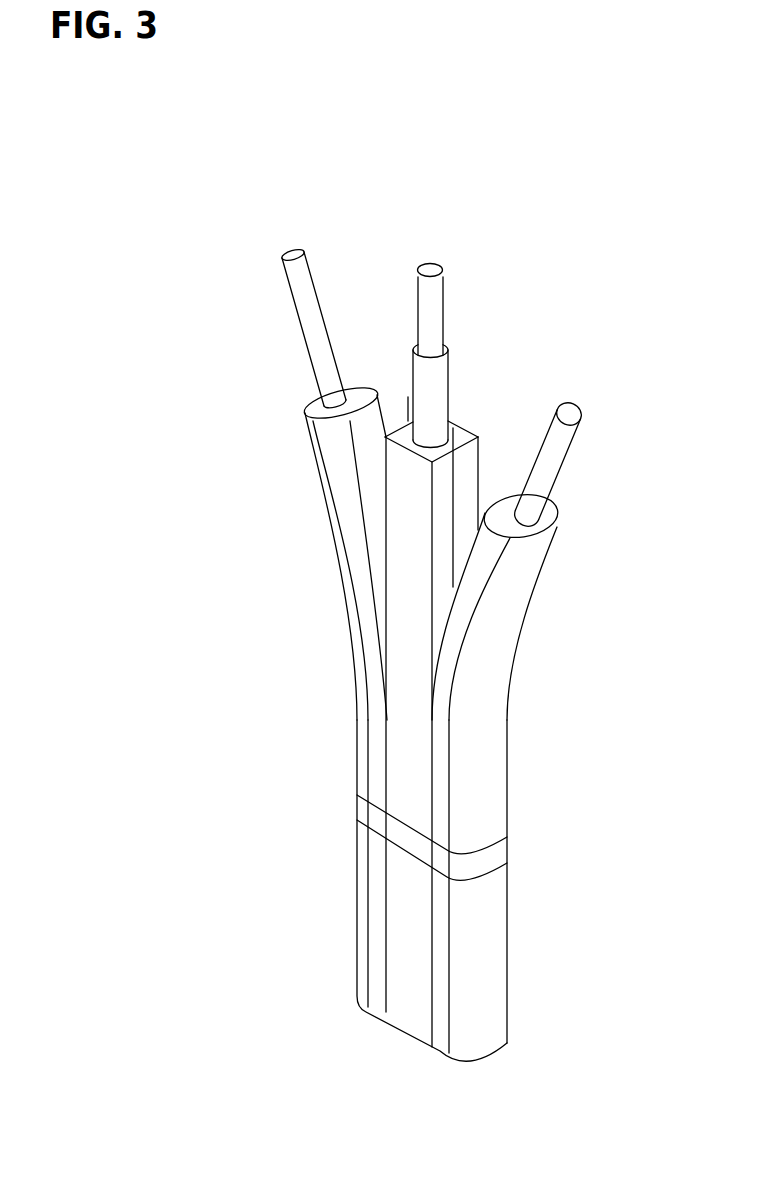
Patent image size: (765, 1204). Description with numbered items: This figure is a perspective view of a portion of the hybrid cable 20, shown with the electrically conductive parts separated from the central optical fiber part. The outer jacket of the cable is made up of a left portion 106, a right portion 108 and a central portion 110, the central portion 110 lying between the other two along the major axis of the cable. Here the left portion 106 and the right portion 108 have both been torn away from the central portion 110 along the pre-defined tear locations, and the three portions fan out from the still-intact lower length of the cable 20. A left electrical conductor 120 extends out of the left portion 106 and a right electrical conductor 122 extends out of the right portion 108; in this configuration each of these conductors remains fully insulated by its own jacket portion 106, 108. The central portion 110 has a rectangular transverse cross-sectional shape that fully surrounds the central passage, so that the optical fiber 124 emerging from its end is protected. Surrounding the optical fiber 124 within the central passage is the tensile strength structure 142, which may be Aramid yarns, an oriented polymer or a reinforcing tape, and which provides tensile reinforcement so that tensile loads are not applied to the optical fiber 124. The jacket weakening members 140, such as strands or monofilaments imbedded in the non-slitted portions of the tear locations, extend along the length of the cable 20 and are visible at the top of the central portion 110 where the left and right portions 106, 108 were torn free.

The hybrid cable 20 is at (578, 787).
The left portion 106 is at (313, 448).
The right portion 108 is at (552, 542).
The central portion 110 is at (500, 362).
The left electrical conductor 120 is at (303, 278).
The right electrical conductor 122 is at (563, 437).
The optical fiber 124 is at (442, 282).
The jacket weakening members 140 is at (407, 422).
The tensile strength structure 142 is at (486, 321).